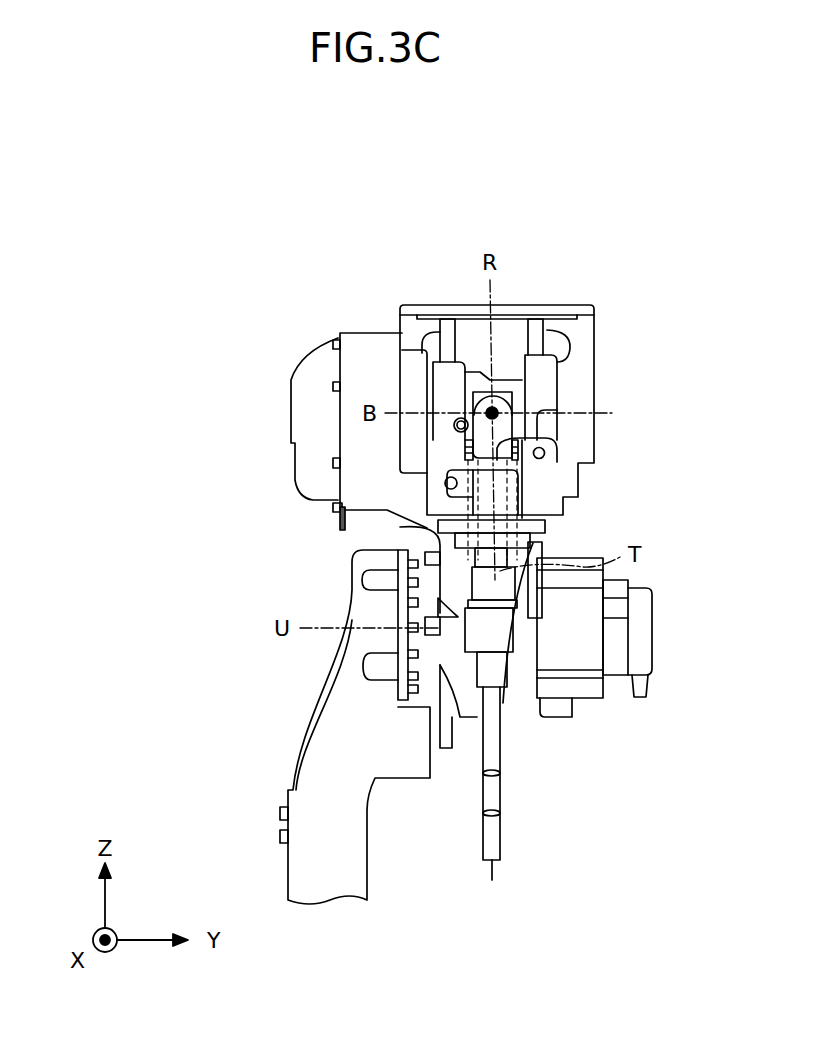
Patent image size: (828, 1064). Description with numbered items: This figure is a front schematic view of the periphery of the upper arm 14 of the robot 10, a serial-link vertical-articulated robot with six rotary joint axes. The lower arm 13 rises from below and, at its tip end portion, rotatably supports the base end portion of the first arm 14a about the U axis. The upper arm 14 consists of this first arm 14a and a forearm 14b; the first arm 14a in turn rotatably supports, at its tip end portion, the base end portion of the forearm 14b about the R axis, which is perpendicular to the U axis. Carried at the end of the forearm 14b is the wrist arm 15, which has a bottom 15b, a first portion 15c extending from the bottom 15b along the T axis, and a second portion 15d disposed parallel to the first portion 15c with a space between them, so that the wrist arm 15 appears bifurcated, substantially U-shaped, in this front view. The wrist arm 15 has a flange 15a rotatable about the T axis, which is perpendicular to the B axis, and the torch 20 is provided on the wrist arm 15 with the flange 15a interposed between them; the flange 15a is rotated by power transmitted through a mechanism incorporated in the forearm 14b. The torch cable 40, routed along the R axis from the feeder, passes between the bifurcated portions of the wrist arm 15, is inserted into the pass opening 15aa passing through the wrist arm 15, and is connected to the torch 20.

The robot 10 is at (203, 203).
The lower arm 13 is at (315, 866).
The upper arm 14 is at (450, 232).
The first arm 14a is at (377, 333).
The forearm 14b is at (414, 303).
The wrist arm 15 is at (579, 353).
The flange 15a is at (400, 527).
The pass opening 15aa is at (517, 465).
The bottom 15b is at (557, 448).
The first portion 15c is at (443, 378).
The second portion 15d is at (552, 373).
The torch 20 is at (500, 752).
The torch cable 40 is at (483, 440).